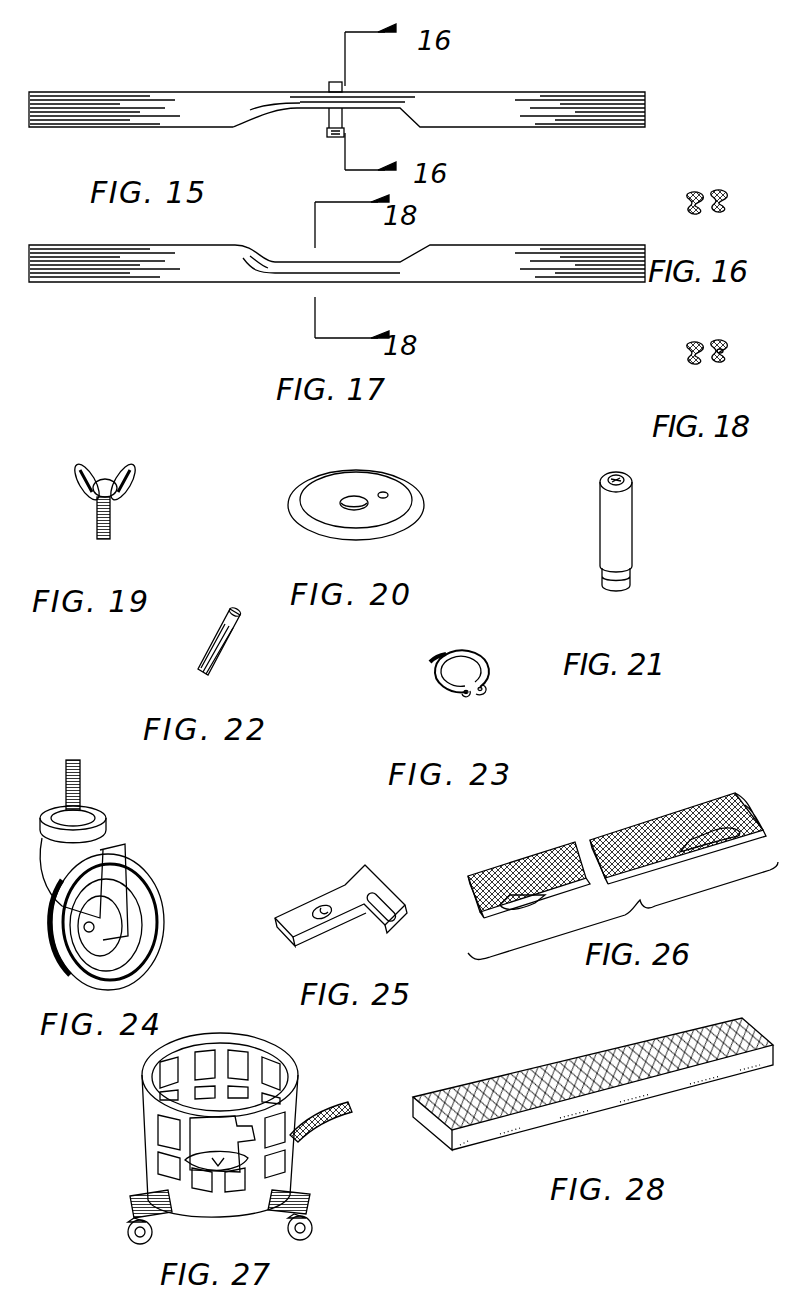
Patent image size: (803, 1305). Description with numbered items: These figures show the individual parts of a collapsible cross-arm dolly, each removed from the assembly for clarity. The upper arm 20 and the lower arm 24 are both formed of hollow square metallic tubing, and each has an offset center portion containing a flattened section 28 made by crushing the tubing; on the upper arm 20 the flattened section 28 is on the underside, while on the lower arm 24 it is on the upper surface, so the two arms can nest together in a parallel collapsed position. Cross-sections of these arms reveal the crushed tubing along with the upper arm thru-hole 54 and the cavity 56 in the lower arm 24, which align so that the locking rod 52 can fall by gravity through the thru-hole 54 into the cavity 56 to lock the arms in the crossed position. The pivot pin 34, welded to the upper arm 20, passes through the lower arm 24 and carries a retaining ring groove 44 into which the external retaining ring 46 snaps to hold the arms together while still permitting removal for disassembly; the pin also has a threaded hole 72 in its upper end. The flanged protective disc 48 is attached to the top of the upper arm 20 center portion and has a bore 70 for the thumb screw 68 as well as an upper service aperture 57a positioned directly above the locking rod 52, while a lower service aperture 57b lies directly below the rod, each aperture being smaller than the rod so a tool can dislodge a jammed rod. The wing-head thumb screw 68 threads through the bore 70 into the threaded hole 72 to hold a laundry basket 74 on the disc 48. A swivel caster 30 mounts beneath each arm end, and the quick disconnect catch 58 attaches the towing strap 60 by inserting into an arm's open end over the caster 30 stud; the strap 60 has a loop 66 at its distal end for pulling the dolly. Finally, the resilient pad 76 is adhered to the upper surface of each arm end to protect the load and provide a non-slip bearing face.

In FIG. 15, the upper arm 20 is at (520, 92).
In FIG. 16, the upper arm 20 is at (688, 205).
In FIG. 17, the lower arm 24 is at (163, 283).
In FIG. 18, the lower arm 24 is at (690, 362).
In FIG. 15, the flattened section 28 is at (297, 108).
In FIG. 17, the flattened section 28 is at (405, 262).
In FIG. 15, the pivot pin 34 is at (330, 82).
In FIG. 21, the pivot pin 34 is at (633, 528).
In FIG. 15, the retaining ring groove 44 is at (333, 137).
In FIG. 21, the retaining ring groove 44 is at (600, 576).
In FIG. 16, the upper arm thru-hole 54 is at (714, 192).
In FIG. 18, the cavity 56 is at (700, 342).
In FIG. 20, the upper service aperture 57a is at (388, 494).
In FIG. 18, the lower service aperture 57b is at (713, 365).
In FIG. 19, the thumb screw 68 is at (85, 468).
In FIG. 27, the thumb screw 68 is at (180, 1164).
In FIG. 20, the flanged protective disc 48 is at (300, 492).
In FIG. 20, the bore 70 is at (365, 500).
In FIG. 21, the threaded hole 72 is at (604, 478).
In FIG. 22, the locking rod 52 is at (203, 650).
In FIG. 23, the external retaining ring 46 is at (428, 670).
In FIG. 24, the caster 30 is at (153, 887).
In FIG. 27, the caster 30 is at (130, 1240).
In FIG. 25, the quick disconnect catch 58 is at (364, 866).
In FIG. 26, the towing strap 60 is at (618, 825).
In FIG. 27, the towing strap 60 is at (328, 1110).
In FIG. 26, the loop 66 is at (698, 858).
In FIG. 27, the laundry basket 74 is at (228, 1035).
In FIG. 28, the resilient pad 76 is at (660, 1100).